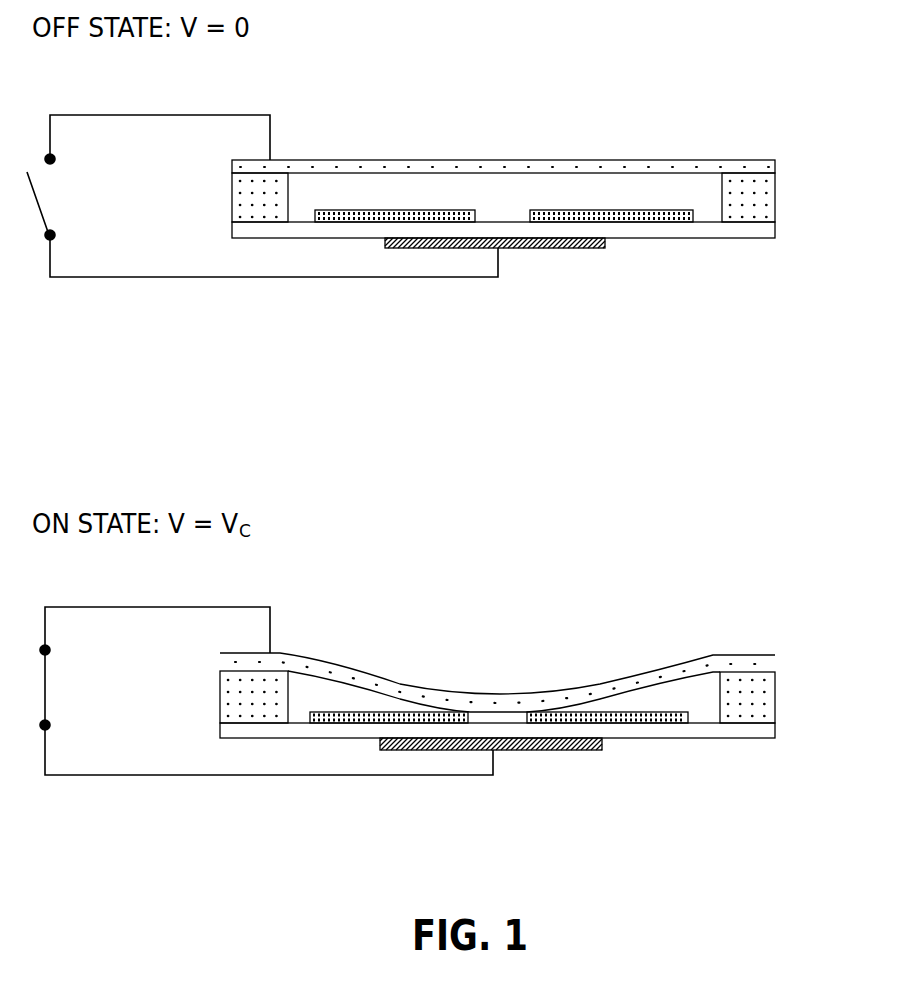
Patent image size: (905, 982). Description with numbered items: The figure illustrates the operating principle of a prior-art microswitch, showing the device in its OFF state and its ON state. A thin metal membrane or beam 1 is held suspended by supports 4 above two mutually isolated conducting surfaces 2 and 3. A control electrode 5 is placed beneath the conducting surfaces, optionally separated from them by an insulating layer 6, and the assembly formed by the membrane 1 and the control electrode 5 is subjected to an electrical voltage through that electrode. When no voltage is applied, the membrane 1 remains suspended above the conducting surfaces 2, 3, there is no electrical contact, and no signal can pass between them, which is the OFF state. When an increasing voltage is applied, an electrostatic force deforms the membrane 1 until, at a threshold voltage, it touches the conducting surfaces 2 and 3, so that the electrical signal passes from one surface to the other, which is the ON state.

The metal membrane 1 is at (382, 168).
The conducting surface 2 is at (430, 212).
The conducting surface 3 is at (627, 215).
The support 4 is at (758, 202).
The control electrode 5 is at (570, 248).
The insulating layer 6 is at (713, 230).